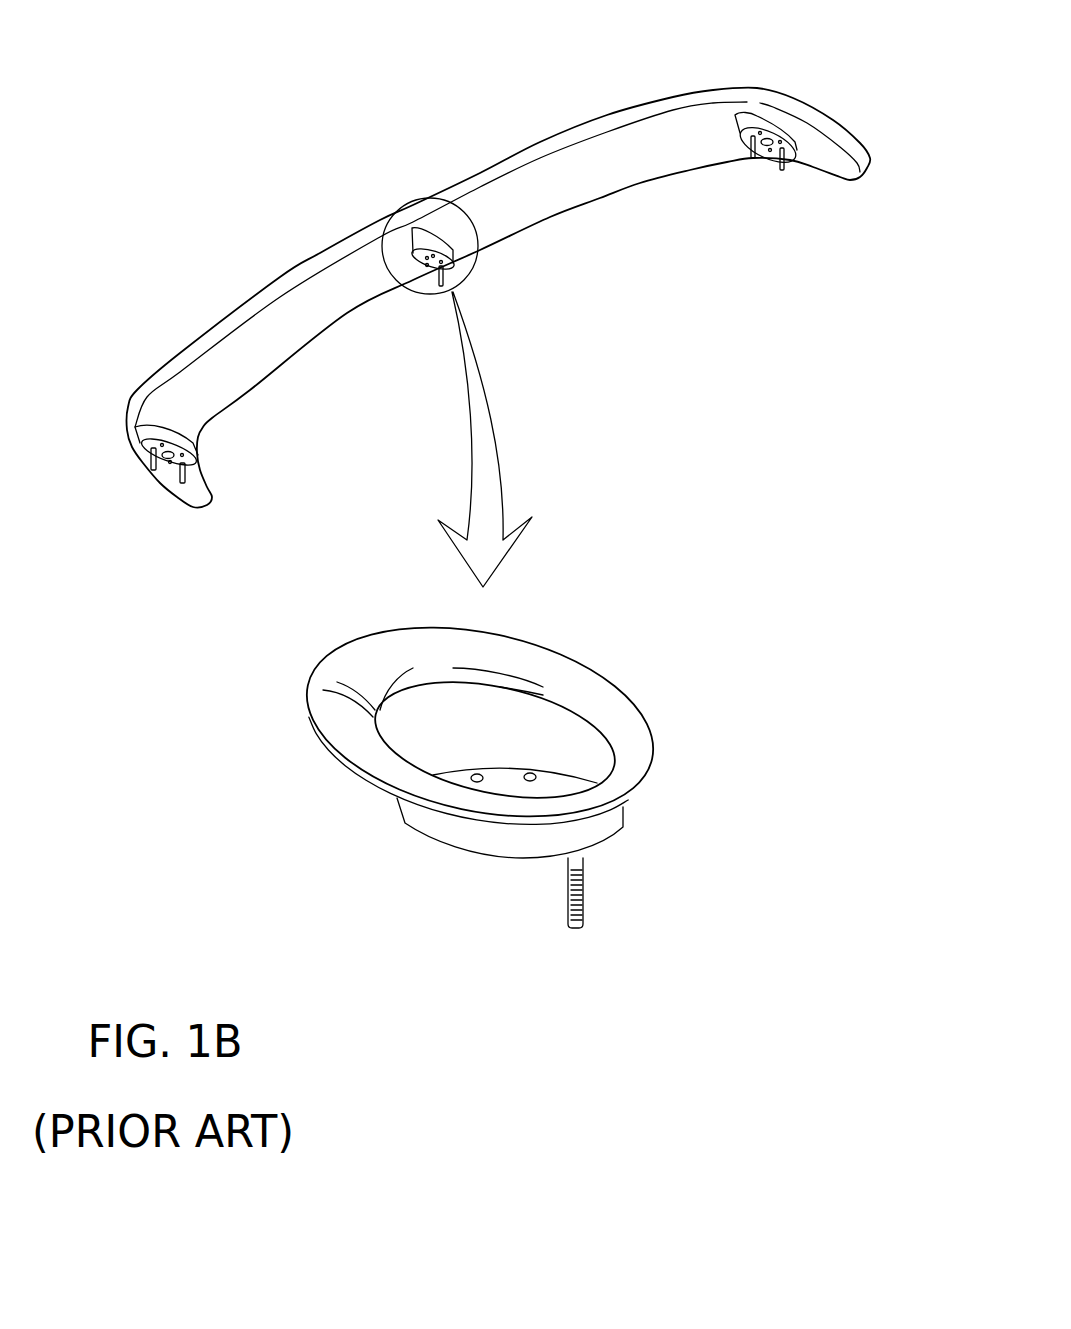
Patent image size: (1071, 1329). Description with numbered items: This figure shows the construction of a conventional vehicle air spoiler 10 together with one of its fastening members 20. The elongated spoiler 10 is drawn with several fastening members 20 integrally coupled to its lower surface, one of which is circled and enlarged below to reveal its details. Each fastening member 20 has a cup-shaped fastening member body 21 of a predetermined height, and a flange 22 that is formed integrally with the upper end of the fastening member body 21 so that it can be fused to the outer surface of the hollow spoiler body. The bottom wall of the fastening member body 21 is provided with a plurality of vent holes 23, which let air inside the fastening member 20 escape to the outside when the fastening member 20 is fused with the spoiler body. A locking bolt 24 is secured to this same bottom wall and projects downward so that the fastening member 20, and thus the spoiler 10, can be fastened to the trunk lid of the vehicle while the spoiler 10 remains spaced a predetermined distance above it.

The air spoiler 10 is at (570, 200).
The fastening member 20 is at (464, 466).
The fastening member body 21 is at (613, 830).
The flange 22 is at (638, 737).
The vent hole 23 is at (530, 773).
The locking bolt 24 is at (587, 885).